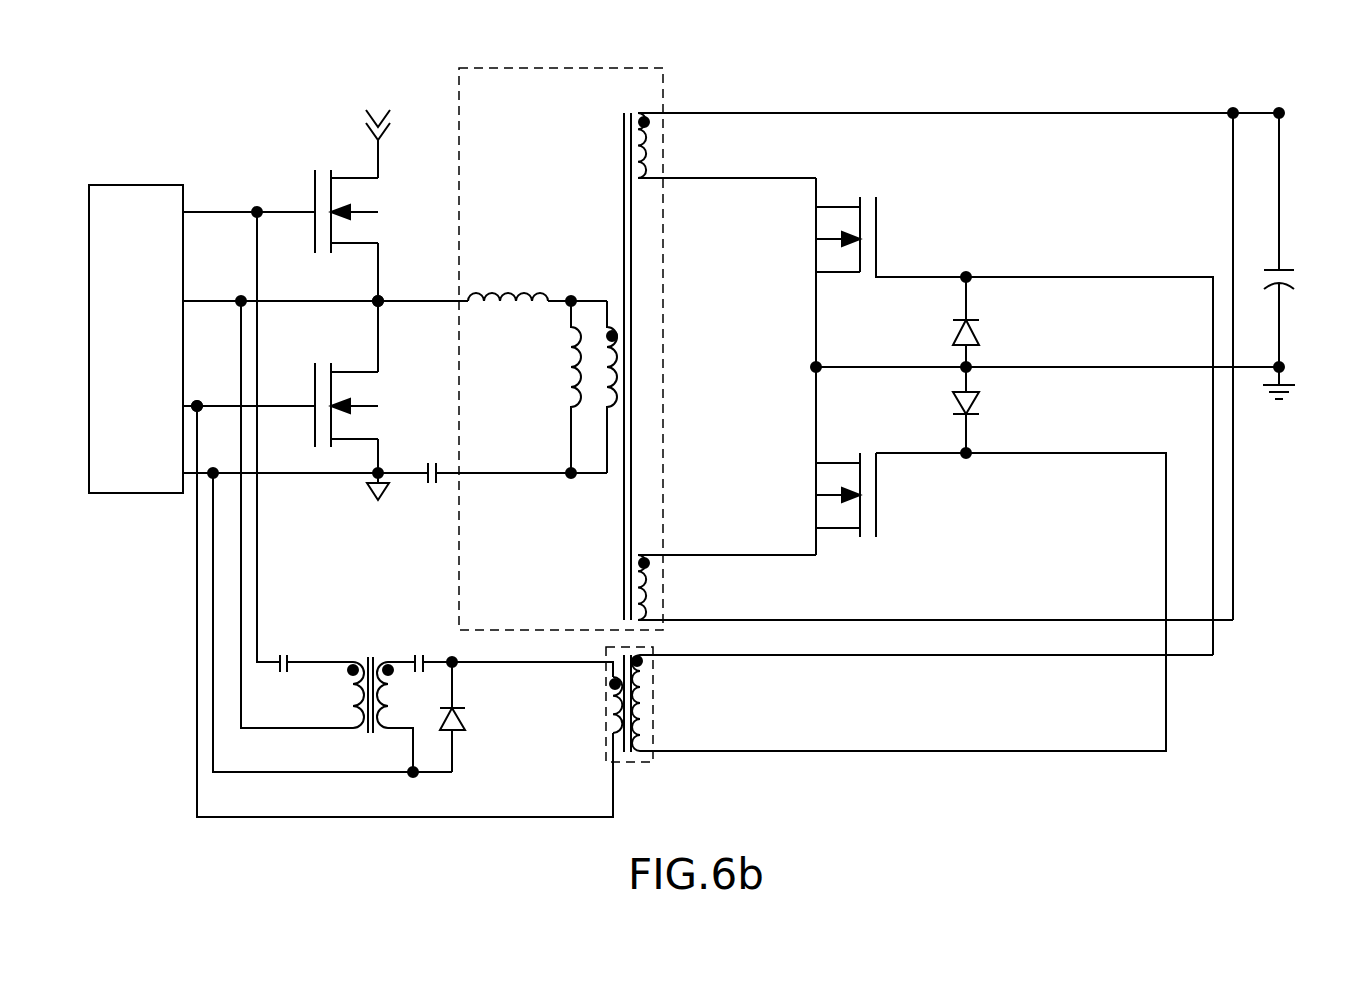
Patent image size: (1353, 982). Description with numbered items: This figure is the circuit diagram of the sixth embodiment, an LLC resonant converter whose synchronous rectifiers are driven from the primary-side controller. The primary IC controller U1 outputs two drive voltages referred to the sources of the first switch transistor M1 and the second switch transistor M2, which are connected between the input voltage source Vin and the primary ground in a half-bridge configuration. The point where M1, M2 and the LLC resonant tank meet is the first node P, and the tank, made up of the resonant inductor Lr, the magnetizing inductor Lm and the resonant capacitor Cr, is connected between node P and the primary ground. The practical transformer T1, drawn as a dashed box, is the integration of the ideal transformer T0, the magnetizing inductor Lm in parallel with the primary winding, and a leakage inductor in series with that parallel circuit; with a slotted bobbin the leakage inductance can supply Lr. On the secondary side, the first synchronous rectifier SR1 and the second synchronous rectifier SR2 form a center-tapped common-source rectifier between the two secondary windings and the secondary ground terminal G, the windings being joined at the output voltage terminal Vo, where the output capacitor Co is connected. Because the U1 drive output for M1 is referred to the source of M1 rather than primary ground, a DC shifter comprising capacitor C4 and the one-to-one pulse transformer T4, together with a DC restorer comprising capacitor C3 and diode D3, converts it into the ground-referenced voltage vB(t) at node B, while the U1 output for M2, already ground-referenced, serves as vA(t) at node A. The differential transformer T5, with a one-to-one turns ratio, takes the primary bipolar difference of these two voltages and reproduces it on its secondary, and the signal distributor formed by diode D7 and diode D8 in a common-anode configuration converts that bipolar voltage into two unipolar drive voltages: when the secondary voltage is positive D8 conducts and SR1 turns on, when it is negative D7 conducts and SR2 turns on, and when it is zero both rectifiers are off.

The primary IC controller U1 is at (136, 339).
The first switch transistor M1 is at (366, 235).
The second switch transistor M2 is at (366, 387).
The input voltage source Vin is at (376, 129).
The first node P is at (366, 315).
The drive voltage vA(t) terminal A is at (197, 391).
The drive voltage vB(t) terminal B is at (449, 645).
The secondary ground terminal G is at (799, 368).
The resonant capacitor Cr is at (474, 458).
The resonant inductor Lr is at (537, 273).
The magnetizing inductor Lm is at (551, 387).
The practical transformer T1 is at (502, 68).
The ideal transformer T0 is at (925, 352).
The first synchronous rectifier SR1 is at (983, 416).
The second synchronous rectifier SR2 is at (959, 602).
The diode D7 is at (987, 322).
The diode D8 is at (987, 410).
The output voltage terminal Vo is at (1271, 362).
The output capacitor Co is at (1298, 256).
The capacitor C4 is at (313, 647).
The pulse transformer T4 is at (381, 697).
The capacitor C3 is at (510, 650).
The diode D3 is at (436, 717).
The differential transformer T5 is at (892, 701).